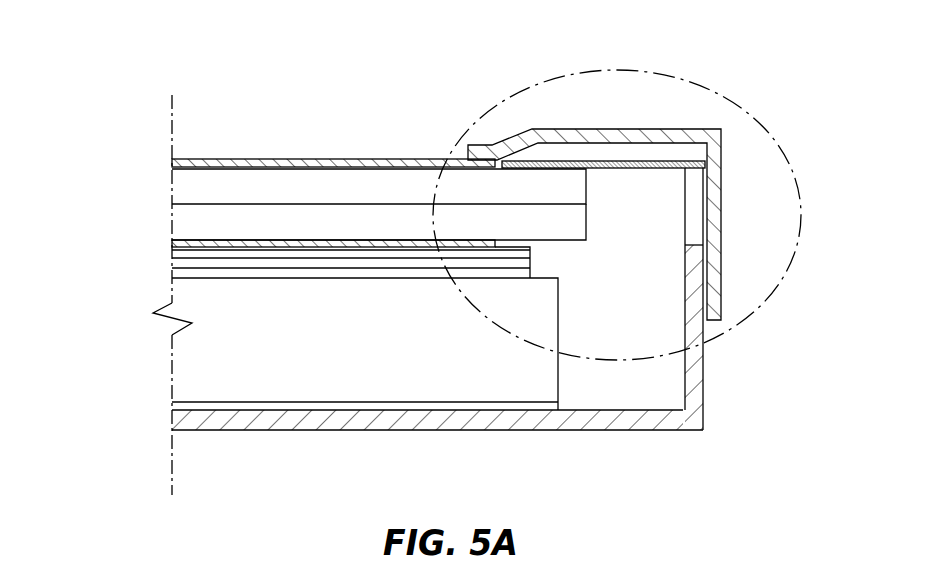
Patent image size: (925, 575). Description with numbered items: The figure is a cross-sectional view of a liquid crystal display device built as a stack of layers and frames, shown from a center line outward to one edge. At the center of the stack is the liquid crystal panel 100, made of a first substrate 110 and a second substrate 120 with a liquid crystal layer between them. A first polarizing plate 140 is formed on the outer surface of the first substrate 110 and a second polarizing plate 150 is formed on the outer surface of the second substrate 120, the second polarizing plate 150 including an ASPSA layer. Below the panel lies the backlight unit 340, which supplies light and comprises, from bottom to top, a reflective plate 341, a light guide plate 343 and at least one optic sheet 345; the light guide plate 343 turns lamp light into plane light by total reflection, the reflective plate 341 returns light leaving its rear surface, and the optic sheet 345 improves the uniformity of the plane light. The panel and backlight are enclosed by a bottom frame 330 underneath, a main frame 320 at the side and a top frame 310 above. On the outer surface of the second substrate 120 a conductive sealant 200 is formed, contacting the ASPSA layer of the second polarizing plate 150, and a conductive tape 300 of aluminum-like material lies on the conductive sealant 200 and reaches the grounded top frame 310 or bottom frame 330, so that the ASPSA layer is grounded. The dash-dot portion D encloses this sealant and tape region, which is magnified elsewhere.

The liquid crystal panel 100 is at (300, 195).
The first substrate 110 is at (183, 222).
The second substrate 120 is at (183, 188).
The first polarizing plate 140 is at (180, 244).
The second polarizing plate 150 is at (238, 161).
The conductive sealant 200 is at (512, 155).
The conductive tape 300 is at (612, 160).
The top frame 310 is at (721, 183).
The main frame 320 is at (672, 335).
The bottom frame 330 is at (693, 387).
The backlight unit 340 is at (356, 338).
The reflective plate 341 is at (400, 417).
The light guide plate 343 is at (190, 367).
The optic sheet 345 is at (178, 250).
The portion D is at (740, 105).